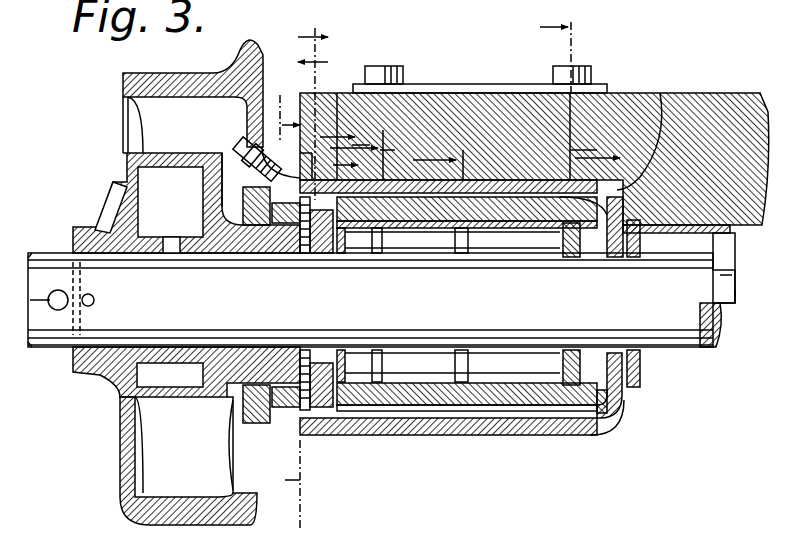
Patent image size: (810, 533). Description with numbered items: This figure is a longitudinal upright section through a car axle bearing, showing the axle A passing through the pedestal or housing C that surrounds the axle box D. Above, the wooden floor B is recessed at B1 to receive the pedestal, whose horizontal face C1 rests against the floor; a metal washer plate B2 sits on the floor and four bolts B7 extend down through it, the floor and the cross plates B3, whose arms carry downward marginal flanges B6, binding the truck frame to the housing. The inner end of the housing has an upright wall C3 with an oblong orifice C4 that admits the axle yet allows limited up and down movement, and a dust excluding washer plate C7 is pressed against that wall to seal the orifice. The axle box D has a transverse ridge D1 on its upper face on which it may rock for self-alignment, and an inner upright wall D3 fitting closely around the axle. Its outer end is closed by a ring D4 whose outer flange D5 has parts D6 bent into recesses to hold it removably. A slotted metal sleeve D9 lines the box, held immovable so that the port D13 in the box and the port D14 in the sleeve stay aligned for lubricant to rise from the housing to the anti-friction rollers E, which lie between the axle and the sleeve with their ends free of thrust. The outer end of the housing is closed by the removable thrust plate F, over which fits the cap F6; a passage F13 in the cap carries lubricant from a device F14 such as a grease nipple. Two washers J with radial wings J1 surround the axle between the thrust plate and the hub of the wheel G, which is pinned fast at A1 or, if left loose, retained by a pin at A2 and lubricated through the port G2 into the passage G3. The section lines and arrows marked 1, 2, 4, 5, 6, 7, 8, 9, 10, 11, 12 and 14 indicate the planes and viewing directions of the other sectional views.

The axle A is at (715, 300).
The pin location in axle A1 is at (95, 300).
The pin location in axle A2 is at (58, 310).
The shaft surface 14 is at (381, 292).
The floor B is at (723, 105).
The recess B1 is at (662, 93).
The washer plate B2 is at (470, 82).
The bolts B7 is at (398, 68).
The cross plates B3 is at (733, 236).
The marginal flanges B6 is at (736, 262).
The pedestal or housing C is at (505, 436).
The horizontal face C1 is at (512, 93).
The upright wall C3 is at (624, 420).
The oblong orifice C4 is at (624, 248).
The dust excluding washer plate C7 is at (608, 395).
The axle box D is at (550, 240).
The ridge or summit D1 is at (460, 253).
The upright wall D3 is at (632, 258).
The ring D4 is at (333, 262).
The outer flange D5 is at (395, 225).
The bent parts of flange D6 is at (565, 260).
The metal sleeve D9 is at (498, 380).
The port D13 is at (415, 395).
The port D14 is at (368, 437).
The anti-friction rollers E is at (575, 355).
The thrust plate F is at (215, 400).
The cap F6 is at (233, 440).
The passage F13 is at (262, 150).
The lubricant receiving device F14 is at (222, 150).
The wheel G is at (140, 480).
The port G2 is at (105, 215).
The lubricant passage G3 is at (150, 212).
The washers J is at (276, 255).
The radial wings J1 is at (290, 430).
The arrow 1 is at (358, 134).
The arrow 2 is at (337, 122).
The arrow 4 is at (439, 295).
The section line 5 is at (560, 440).
The arrow 6 is at (596, 440).
The arrow 7 is at (390, 413).
The arrow 8 is at (372, 413).
The arrow 9 is at (345, 335).
The section line 10 is at (325, 278).
The arrow 11 is at (305, 288).
The section line 12 is at (285, 281).